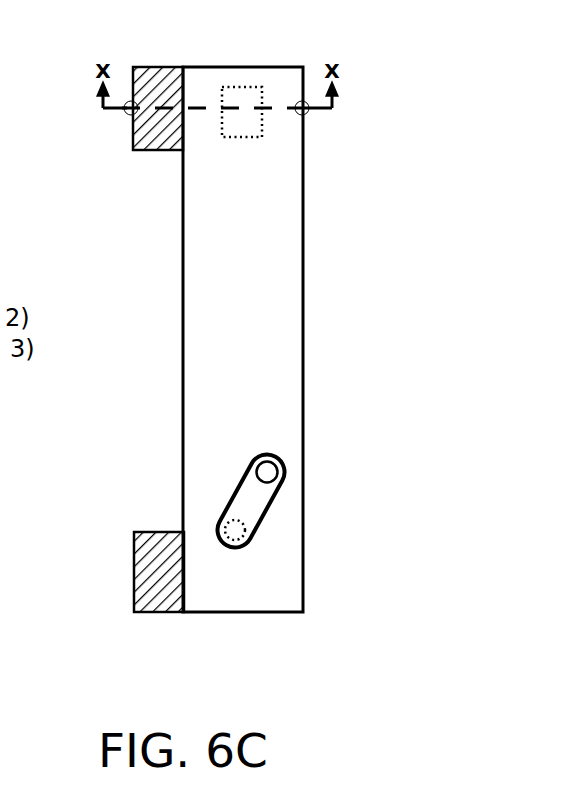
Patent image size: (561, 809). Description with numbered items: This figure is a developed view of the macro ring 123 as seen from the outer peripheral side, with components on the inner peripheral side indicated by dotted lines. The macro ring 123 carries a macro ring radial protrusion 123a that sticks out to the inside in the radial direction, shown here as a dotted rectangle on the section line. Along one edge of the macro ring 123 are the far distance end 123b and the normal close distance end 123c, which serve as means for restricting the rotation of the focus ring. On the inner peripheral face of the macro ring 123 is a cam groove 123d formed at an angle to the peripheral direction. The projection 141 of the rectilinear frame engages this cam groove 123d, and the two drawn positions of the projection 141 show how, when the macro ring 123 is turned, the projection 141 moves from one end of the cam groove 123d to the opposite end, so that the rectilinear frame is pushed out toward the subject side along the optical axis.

The macro ring 123 is at (217, 295).
The macro ring radial protrusion 123a is at (247, 107).
The far distance end 123b is at (153, 530).
The normal close distance end 123c is at (153, 150).
The cam groove 123d is at (268, 510).
The projection 141 is at (267, 472).